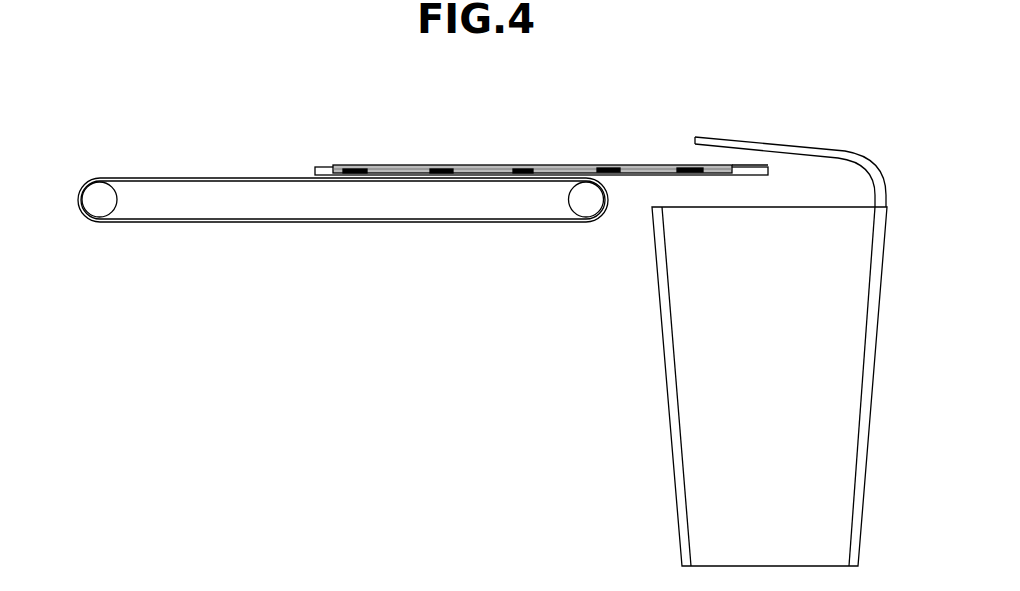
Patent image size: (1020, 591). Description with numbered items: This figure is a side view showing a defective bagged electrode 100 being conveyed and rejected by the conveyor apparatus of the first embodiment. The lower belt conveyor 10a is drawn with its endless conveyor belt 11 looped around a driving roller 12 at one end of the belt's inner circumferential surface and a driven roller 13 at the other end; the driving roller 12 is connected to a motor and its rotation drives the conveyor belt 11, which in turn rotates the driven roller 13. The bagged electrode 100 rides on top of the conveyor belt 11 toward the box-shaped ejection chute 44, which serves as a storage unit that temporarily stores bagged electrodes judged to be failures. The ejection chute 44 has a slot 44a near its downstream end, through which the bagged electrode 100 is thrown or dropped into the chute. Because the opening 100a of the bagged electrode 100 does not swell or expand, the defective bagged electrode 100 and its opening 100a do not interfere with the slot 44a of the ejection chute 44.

The lower belt conveyor 10a is at (345, 264).
The conveyor belt 11 is at (290, 179).
The driving roller 12 is at (588, 202).
The driven roller 13 is at (103, 202).
The bagged electrode 100 is at (500, 167).
The opening 100a is at (733, 165).
The ejection chute 44 is at (690, 377).
The slot 44a is at (817, 156).